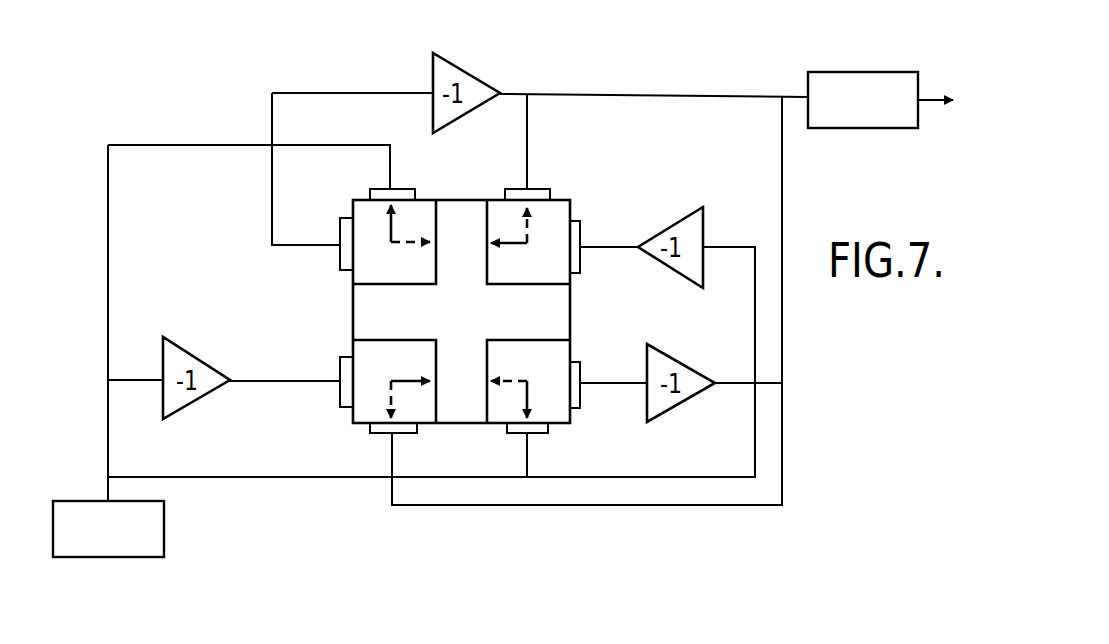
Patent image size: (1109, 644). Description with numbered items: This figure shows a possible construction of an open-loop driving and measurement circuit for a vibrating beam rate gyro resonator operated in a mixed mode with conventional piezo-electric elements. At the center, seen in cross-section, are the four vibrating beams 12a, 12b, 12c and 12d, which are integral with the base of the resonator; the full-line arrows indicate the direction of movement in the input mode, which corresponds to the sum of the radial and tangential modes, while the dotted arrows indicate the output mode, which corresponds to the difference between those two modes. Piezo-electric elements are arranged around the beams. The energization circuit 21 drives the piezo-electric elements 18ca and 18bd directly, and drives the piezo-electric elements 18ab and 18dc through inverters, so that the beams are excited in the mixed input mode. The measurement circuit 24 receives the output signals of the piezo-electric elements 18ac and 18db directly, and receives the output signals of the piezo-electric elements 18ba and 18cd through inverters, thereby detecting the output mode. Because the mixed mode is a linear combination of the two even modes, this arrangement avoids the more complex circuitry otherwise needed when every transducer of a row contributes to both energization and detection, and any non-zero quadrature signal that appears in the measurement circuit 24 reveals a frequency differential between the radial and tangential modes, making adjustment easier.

The vibrating beam 12a is at (419, 353).
The vibrating beam 12b is at (501, 353).
The vibrating beam 12c is at (388, 274).
The vibrating beam 12d is at (532, 268).
The piezo-electric element 18ca is at (405, 192).
The piezo-electric element 18db is at (540, 192).
The piezo-electric element 18cd is at (344, 252).
The piezo-electric element 18dc is at (583, 256).
The piezo-electric element 18ab is at (344, 370).
The piezo-electric element 18ba is at (583, 393).
The piezo-electric element 18ac is at (376, 431).
The piezo-electric element 18bd is at (516, 431).
The energization circuit 21 is at (164, 523).
The measurement circuit 24 is at (878, 72).